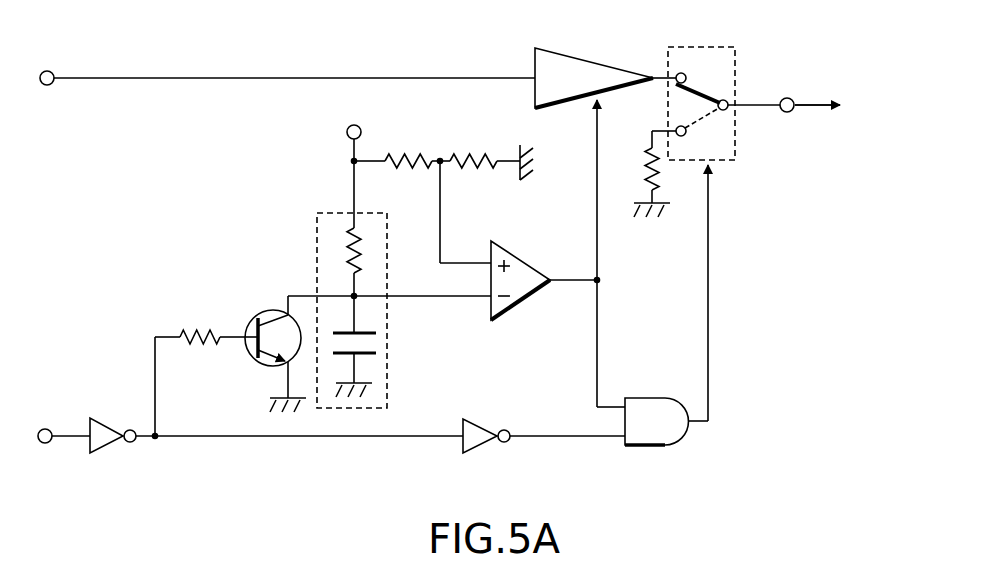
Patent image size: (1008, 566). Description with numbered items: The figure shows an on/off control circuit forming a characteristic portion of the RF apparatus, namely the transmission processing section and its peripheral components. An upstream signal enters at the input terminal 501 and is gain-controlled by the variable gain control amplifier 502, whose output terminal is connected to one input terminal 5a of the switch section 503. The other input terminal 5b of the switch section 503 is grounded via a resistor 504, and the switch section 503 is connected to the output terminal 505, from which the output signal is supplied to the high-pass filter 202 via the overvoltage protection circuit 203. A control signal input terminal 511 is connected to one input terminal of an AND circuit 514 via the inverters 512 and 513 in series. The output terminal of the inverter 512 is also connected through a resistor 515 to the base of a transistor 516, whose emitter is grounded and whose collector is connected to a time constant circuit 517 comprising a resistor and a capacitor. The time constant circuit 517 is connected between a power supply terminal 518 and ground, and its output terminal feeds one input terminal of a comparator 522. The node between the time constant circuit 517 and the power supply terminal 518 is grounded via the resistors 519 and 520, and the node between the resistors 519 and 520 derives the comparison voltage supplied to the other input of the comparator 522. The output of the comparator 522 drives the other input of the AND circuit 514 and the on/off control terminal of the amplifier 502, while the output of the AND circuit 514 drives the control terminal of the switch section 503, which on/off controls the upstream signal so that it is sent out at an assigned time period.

The input terminal 501 is at (51, 71).
The variable gain control amplifier 502 is at (578, 59).
The switch section 503 is at (700, 47).
The input terminal of the switch section 5a is at (686, 65).
The other input terminal of the switch section 5b is at (672, 145).
The resistor 504 is at (650, 152).
The output terminal 505 is at (787, 97).
The overvoltage protection circuit 203 is at (841, 96).
The high-pass filter 202 is at (837, 120).
The control signal input terminal 511 is at (50, 428).
The inverter 512 is at (113, 445).
The inverter 513 is at (473, 424).
The AND circuit 514 is at (642, 398).
The resistor 515 is at (202, 348).
The transistor 516 is at (258, 318).
The time constant circuit 517 is at (317, 228).
The power supply terminal 518 is at (354, 124).
The resistor 519 is at (410, 151).
The resistor 520 is at (478, 151).
The comparator 522 is at (516, 304).